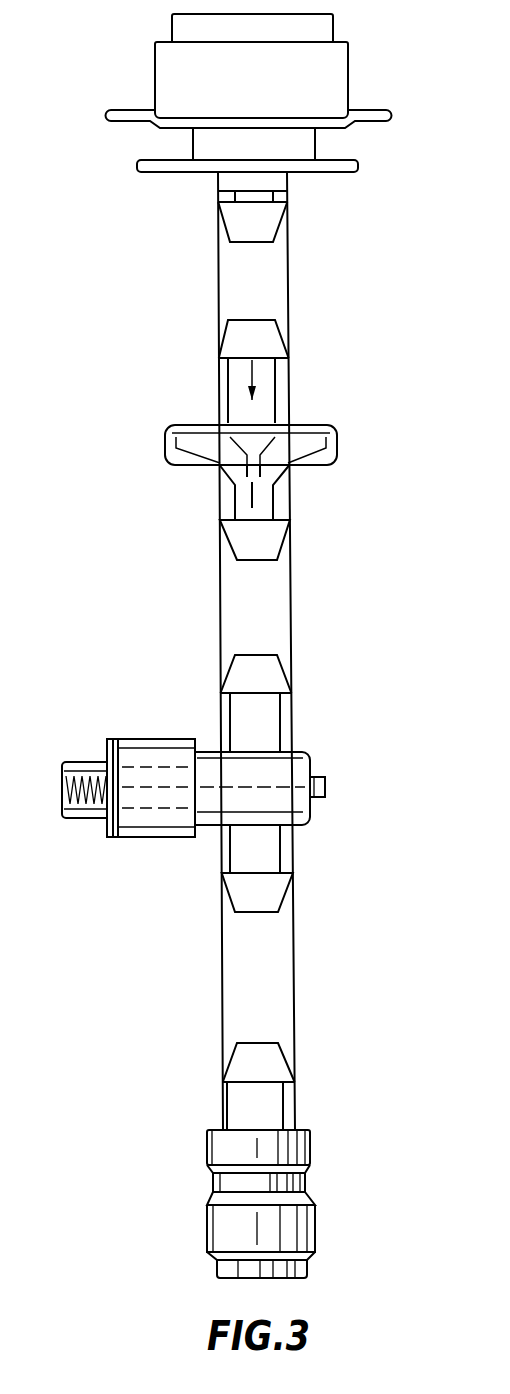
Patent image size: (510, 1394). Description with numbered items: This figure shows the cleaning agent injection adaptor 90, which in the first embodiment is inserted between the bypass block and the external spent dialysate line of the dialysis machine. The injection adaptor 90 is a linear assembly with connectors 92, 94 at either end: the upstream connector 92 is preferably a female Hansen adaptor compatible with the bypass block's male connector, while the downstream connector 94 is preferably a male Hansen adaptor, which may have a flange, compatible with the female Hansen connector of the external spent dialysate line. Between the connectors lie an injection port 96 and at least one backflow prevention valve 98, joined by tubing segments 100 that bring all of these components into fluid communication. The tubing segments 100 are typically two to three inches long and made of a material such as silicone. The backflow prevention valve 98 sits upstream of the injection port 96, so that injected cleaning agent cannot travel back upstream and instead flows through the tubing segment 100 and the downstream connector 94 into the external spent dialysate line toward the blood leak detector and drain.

The injection adaptor 90 is at (244, 646).
The upstream connector 92 is at (348, 72).
The downstream connector 94 is at (315, 1222).
The injection port 96 is at (310, 765).
The backflow prevention valve 98 is at (337, 445).
The tubing segments 100 is at (288, 287).